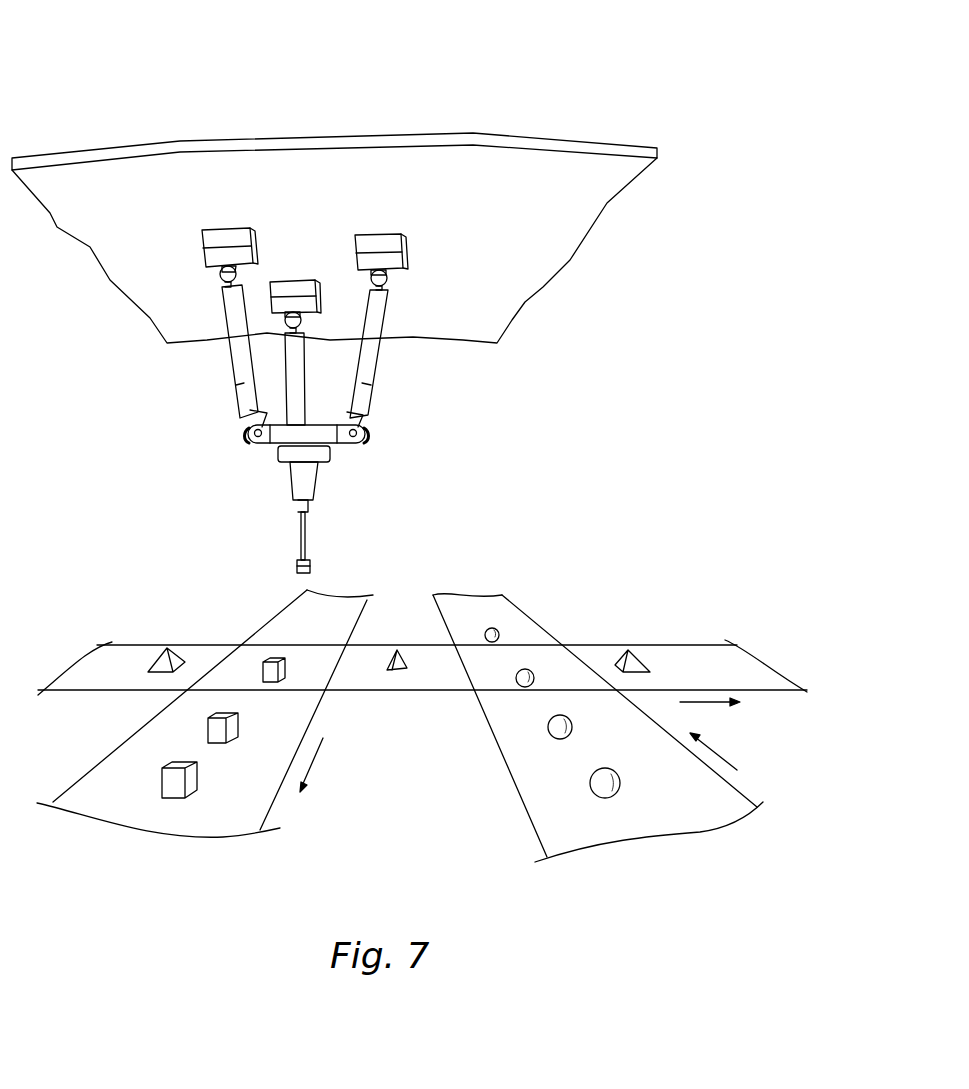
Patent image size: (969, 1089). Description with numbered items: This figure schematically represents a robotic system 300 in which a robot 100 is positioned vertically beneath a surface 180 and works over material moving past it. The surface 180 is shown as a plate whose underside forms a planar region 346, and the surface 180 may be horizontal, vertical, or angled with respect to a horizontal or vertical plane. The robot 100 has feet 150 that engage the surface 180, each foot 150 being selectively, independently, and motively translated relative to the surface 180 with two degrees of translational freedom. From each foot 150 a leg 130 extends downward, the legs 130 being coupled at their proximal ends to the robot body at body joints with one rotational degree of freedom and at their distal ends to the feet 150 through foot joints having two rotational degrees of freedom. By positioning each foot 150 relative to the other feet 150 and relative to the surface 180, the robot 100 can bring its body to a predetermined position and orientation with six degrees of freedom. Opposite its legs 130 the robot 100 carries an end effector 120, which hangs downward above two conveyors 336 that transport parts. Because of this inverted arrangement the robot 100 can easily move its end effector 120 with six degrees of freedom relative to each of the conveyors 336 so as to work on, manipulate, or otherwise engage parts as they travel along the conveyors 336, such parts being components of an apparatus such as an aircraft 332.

The robotic system 300 is at (143, 53).
The surface 180 is at (604, 212).
The planar region 346 is at (520, 270).
The feet 150 is at (351, 243).
The legs 130 is at (367, 367).
The robot 100 is at (250, 448).
The end effector 120 is at (290, 483).
The conveyors 336 is at (330, 632).
The aircraft 332 is at (515, 678).